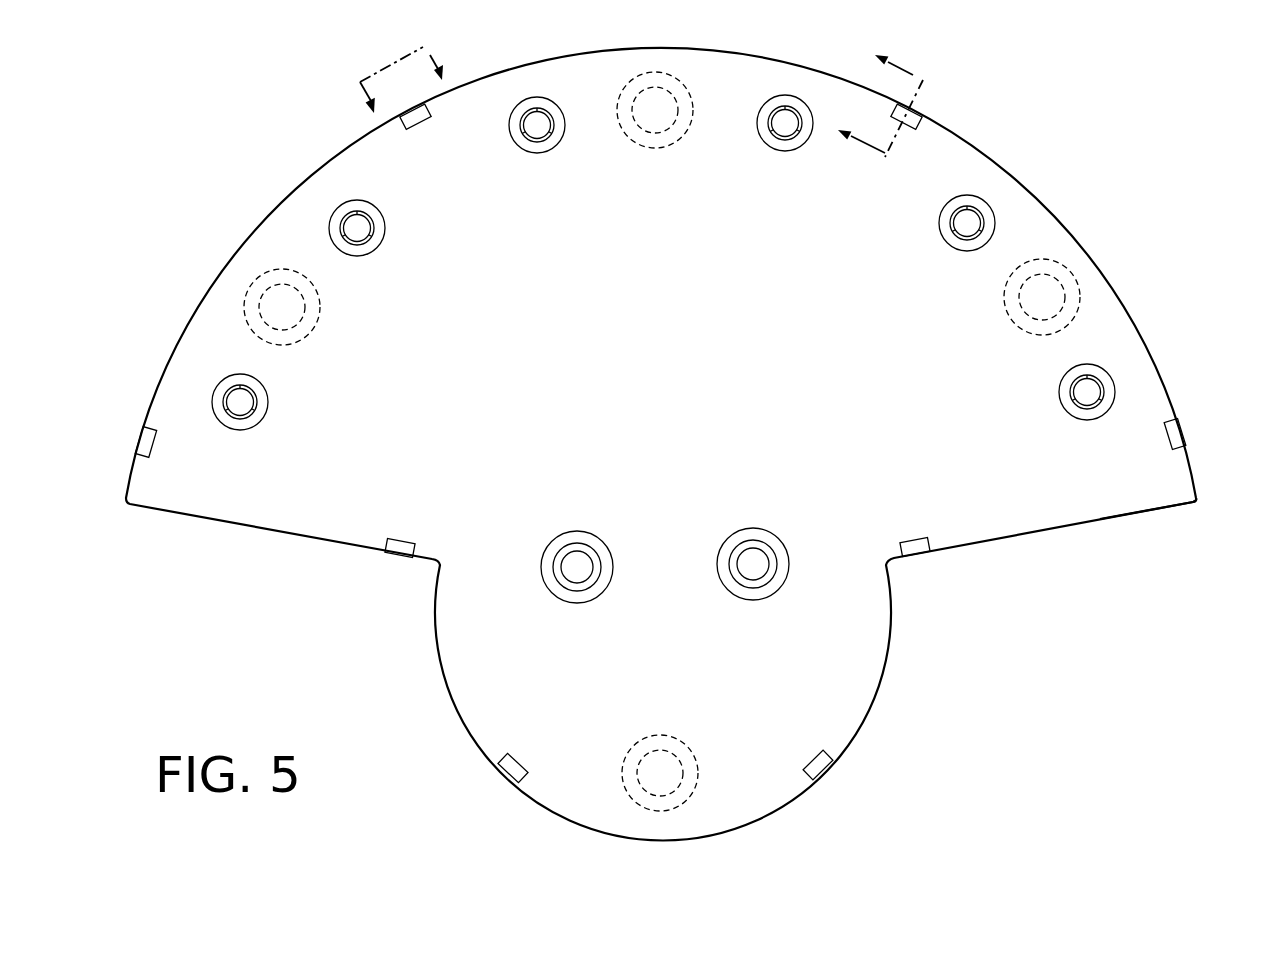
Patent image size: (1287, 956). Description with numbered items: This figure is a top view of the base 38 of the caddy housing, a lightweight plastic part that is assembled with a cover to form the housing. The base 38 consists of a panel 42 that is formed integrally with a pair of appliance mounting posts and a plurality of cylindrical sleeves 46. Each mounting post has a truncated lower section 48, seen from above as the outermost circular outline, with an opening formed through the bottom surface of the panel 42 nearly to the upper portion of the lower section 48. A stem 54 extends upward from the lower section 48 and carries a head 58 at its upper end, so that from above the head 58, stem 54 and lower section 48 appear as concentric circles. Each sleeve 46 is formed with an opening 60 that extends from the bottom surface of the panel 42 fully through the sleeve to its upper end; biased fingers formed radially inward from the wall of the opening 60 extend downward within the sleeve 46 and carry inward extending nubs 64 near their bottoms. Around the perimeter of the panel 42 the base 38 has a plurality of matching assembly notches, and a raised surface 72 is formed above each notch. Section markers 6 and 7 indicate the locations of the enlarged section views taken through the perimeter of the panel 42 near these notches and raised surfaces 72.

The base 38 is at (1124, 158).
The panel 42 is at (1199, 495).
The cylindrical sleeve 46 is at (1121, 378).
The truncated lower section 48 is at (745, 601).
The stem 54 is at (771, 582).
The head 58 is at (756, 561).
The opening 60 is at (1074, 298).
The nub 64 is at (1103, 393).
The raised surface 72 is at (1184, 434).
The section line 6- 6 is at (877, 103).
The section line 7- 7 is at (404, 95).